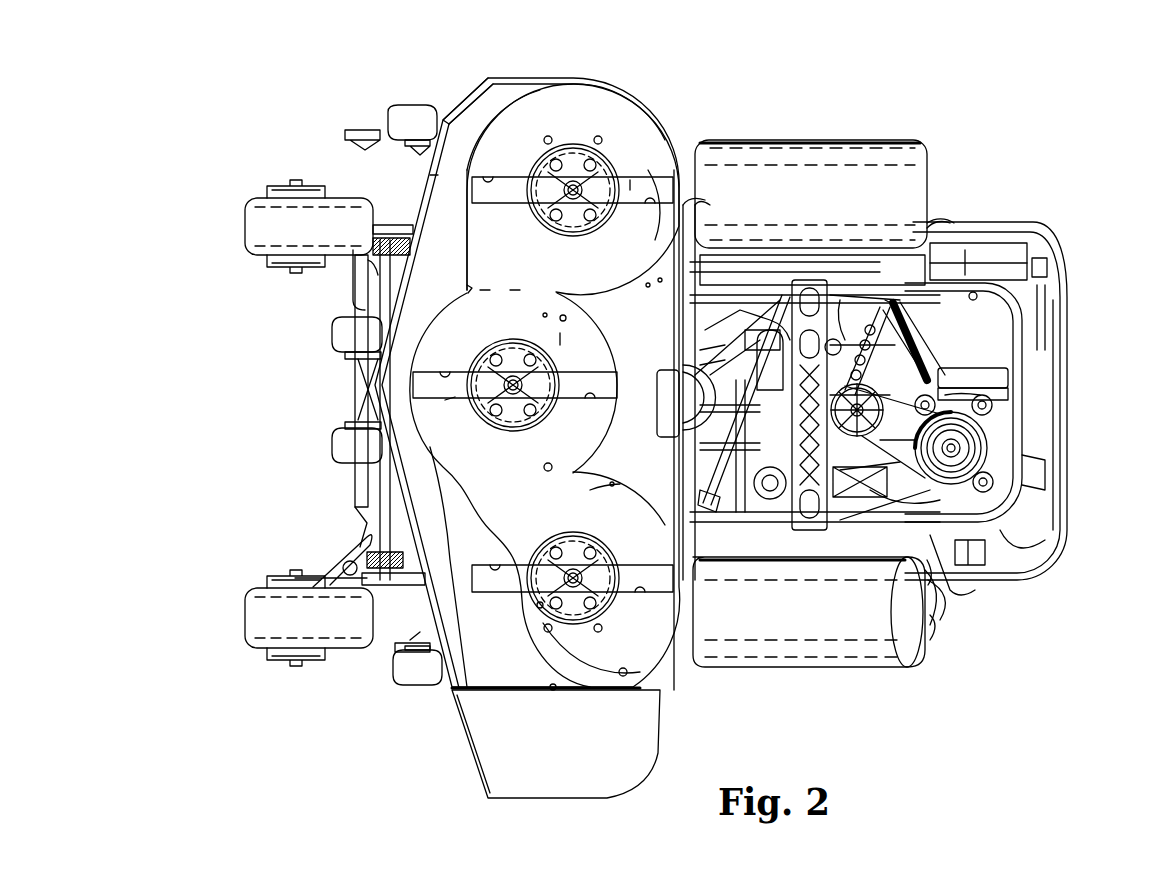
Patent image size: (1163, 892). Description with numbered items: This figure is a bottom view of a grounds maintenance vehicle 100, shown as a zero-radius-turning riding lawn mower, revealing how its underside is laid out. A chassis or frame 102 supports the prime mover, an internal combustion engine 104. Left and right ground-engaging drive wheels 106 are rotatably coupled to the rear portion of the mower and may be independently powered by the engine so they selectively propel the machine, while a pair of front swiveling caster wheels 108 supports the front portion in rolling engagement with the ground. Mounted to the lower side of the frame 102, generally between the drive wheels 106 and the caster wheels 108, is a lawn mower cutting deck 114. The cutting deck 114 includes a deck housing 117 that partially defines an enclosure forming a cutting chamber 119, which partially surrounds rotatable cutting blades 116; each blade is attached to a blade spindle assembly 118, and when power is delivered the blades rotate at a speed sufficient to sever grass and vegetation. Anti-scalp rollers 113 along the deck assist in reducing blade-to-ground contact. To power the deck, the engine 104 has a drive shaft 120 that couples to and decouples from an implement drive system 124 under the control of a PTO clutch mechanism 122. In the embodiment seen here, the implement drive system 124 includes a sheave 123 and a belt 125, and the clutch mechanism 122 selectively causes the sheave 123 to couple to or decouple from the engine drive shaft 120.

The grounds maintenance vehicle 100 is at (1050, 214).
The frame 102 is at (957, 512).
The internal combustion engine 104 is at (1020, 470).
The drive wheels 106 is at (835, 139).
The front swiveling caster wheels 108 is at (245, 228).
The anti-scalp rollers 113 is at (389, 120).
The lawn mower cutting deck 114 is at (593, 75).
The cutting blades 116 is at (648, 170).
The deck housing 117 is at (450, 104).
The blade spindle assembly 118 is at (537, 160).
The cutting chamber 119 is at (497, 147).
The drive shaft 120 is at (1007, 500).
The PTO clutch mechanism 122 is at (962, 452).
The sheave 123 is at (957, 450).
The implement drive system 124 is at (968, 401).
The belt 125 is at (895, 635).